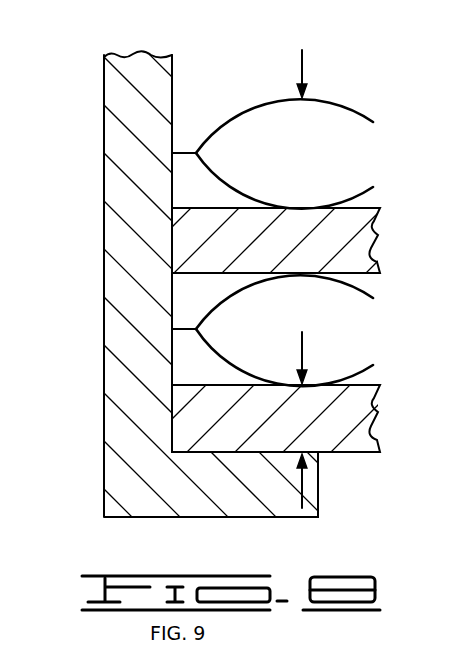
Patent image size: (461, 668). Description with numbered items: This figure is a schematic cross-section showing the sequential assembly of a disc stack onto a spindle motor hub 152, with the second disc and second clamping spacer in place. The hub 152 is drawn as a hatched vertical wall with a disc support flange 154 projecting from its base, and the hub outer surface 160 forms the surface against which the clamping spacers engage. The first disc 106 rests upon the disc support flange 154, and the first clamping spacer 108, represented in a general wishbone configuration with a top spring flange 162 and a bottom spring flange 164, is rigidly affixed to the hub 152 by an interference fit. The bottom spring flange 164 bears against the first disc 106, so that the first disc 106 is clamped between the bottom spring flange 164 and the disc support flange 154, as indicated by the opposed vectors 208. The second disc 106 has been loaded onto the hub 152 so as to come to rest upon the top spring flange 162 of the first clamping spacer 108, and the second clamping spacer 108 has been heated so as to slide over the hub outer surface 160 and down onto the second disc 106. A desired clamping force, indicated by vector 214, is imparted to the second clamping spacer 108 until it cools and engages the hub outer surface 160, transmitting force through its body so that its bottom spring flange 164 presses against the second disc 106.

The spindle motor hub 152 is at (113, 218).
The disc support flange 154 is at (215, 508).
The hub outer surface 160 is at (179, 56).
The force vector 214 is at (312, 62).
The clamping spacer 108 is at (317, 241).
The top spring flange 162 is at (343, 108).
The bottom spring flange 164 is at (348, 193).
The disc 106 is at (378, 232).
The clamping force vectors 208 is at (304, 350).